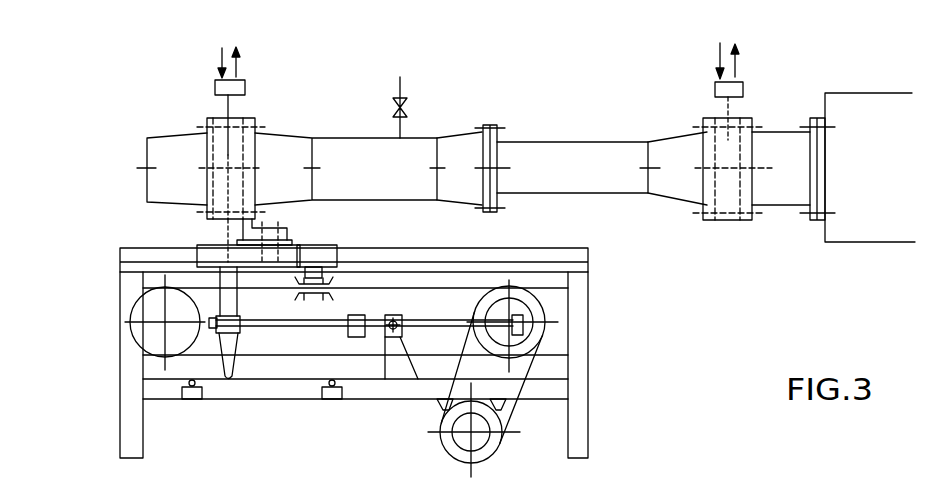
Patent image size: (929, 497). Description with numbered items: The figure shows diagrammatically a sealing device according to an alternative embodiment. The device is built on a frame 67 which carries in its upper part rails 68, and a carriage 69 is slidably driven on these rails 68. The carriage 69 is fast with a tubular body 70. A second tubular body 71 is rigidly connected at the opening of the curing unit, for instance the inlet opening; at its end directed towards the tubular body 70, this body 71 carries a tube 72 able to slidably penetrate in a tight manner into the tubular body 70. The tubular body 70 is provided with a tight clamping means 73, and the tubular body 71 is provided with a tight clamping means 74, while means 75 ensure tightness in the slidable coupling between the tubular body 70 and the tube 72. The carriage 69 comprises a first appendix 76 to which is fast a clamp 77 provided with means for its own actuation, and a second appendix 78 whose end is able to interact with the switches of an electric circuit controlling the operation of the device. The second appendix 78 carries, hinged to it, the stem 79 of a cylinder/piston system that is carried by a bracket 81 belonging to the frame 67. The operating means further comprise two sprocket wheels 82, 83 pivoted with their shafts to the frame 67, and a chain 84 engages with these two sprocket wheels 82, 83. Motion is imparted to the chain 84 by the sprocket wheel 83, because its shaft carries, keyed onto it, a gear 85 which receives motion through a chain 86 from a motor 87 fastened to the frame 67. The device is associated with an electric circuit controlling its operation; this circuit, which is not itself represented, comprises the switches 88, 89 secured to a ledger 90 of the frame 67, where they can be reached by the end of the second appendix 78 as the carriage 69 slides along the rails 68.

The frame 67 is at (578, 342).
The rails 68 is at (520, 255).
The carriage 69 is at (287, 257).
The tubular body 70 is at (350, 128).
The tubular body 71 is at (671, 124).
The tube 72 is at (602, 147).
The tight clamping means 73 is at (221, 122).
The tight clamping means 74 is at (730, 133).
The tightness means 75 is at (495, 123).
The first appendix 76 is at (313, 275).
The clamp 77 is at (300, 295).
The second appendix 78 is at (228, 360).
The stem 79 is at (274, 332).
The bracket 81 is at (403, 365).
The sprocket wheel 82 is at (157, 310).
The sprocket wheel 83 is at (532, 303).
The chain 84 is at (420, 285).
The gear 85 is at (527, 310).
The chain 86 is at (517, 370).
The motor 87 is at (372, 328).
The switch 88 is at (193, 400).
The switch 89 is at (333, 400).
The ledger 90 is at (538, 392).